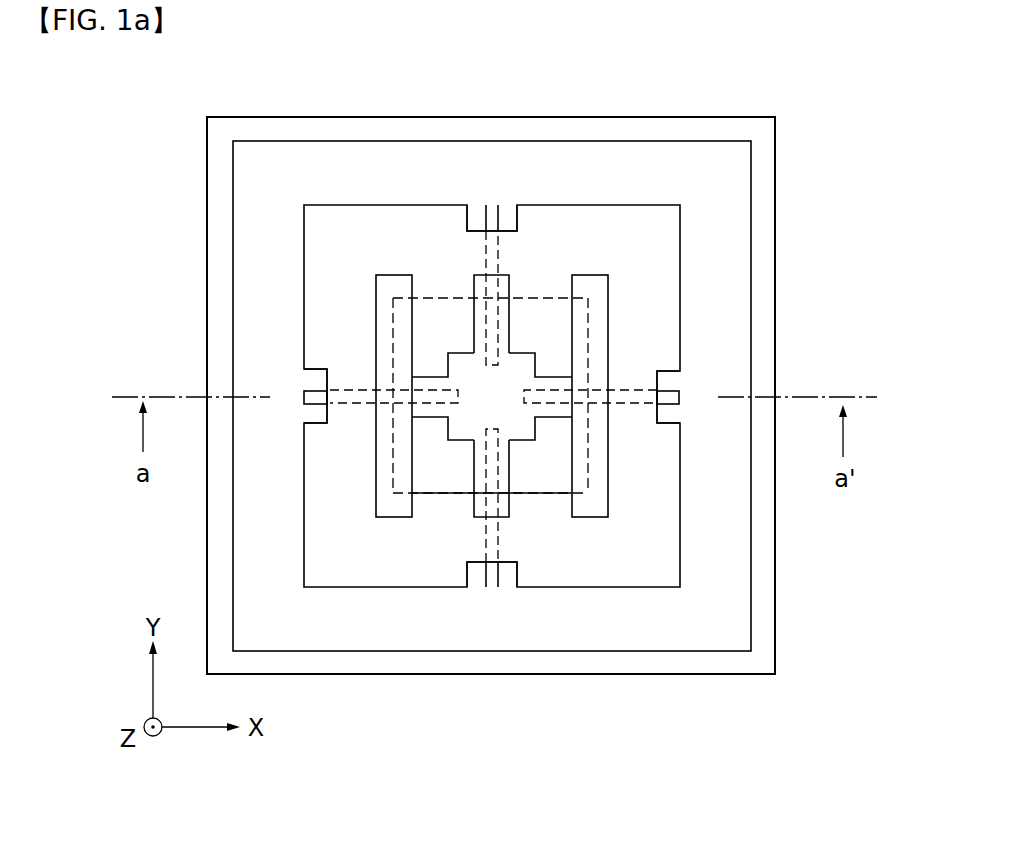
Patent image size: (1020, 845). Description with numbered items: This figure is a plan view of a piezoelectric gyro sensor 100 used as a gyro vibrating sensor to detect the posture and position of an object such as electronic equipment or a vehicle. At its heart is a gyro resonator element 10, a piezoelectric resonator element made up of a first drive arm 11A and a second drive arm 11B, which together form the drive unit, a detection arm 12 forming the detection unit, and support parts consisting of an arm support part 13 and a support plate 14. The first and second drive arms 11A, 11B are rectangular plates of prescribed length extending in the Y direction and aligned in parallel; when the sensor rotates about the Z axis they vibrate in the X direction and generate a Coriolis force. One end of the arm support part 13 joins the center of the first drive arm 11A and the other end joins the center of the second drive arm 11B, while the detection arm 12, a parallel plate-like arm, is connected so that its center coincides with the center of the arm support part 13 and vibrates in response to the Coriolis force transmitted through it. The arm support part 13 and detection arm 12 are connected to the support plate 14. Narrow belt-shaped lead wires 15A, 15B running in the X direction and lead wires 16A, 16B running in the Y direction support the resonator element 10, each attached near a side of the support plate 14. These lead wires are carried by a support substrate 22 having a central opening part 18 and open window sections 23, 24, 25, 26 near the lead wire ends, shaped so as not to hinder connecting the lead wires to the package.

The gyro sensor 100 is at (785, 175).
The gyro resonator element 10 is at (625, 511).
The support substrate 22 is at (653, 237).
The first drive arm 11A is at (393, 287).
The second drive arm 11B is at (587, 283).
The detection arm 12 is at (477, 318).
The support plate 14 is at (462, 428).
The arm support part 13 is at (433, 408).
The opening part 18 is at (542, 462).
The lead wire 16A is at (493, 213).
The lead wire 16B is at (492, 575).
The open window section 26 is at (480, 217).
The open window section 24 is at (505, 575).
The open window section 23 is at (313, 413).
The open window section 25 is at (668, 382).
The lead wire 15A is at (313, 396).
The lead wire 15B is at (668, 397).